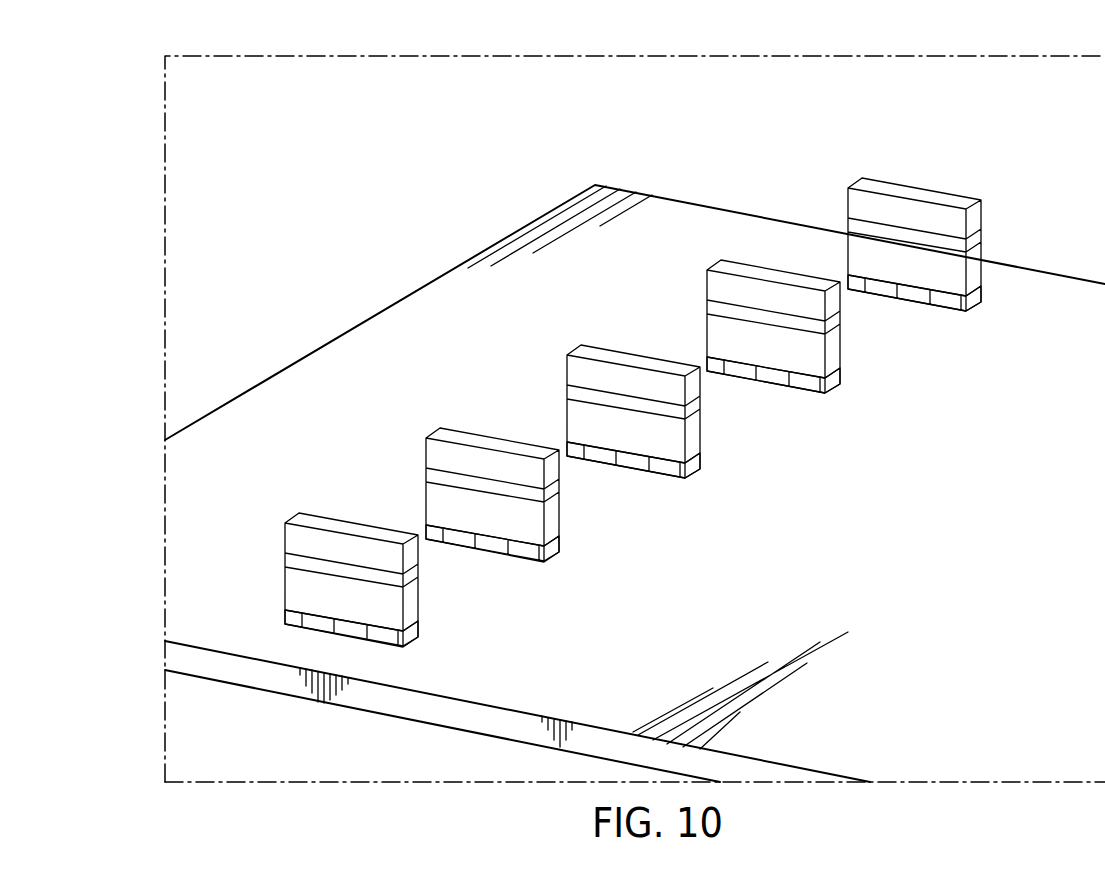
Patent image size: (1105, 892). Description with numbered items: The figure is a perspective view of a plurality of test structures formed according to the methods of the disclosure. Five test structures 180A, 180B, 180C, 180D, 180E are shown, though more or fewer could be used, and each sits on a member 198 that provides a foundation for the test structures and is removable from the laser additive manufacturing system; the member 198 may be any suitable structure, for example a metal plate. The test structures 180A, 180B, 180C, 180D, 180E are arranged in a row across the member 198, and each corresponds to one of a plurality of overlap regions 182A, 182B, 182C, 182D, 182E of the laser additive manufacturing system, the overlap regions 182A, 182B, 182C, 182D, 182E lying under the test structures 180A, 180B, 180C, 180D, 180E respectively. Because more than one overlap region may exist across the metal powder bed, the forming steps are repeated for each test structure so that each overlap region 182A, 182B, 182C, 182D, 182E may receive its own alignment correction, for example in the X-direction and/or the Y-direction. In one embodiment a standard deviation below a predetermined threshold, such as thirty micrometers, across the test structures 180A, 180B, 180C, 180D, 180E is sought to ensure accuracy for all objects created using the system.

The test structure 180A is at (294, 541).
The test structure 180B is at (435, 457).
The test structure 180C is at (576, 374).
The test structure 180D is at (716, 288).
The test structure 180E is at (857, 206).
The overlap region 182A is at (416, 645).
The overlap region 182B is at (529, 568).
The overlap region 182C is at (676, 481).
The overlap region 182D is at (819, 399).
The overlap region 182E is at (965, 317).
The member 198 is at (993, 644).